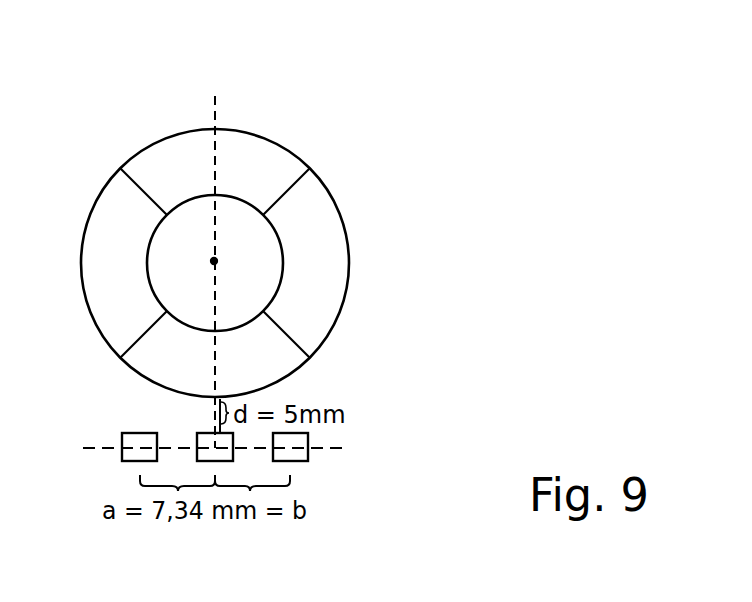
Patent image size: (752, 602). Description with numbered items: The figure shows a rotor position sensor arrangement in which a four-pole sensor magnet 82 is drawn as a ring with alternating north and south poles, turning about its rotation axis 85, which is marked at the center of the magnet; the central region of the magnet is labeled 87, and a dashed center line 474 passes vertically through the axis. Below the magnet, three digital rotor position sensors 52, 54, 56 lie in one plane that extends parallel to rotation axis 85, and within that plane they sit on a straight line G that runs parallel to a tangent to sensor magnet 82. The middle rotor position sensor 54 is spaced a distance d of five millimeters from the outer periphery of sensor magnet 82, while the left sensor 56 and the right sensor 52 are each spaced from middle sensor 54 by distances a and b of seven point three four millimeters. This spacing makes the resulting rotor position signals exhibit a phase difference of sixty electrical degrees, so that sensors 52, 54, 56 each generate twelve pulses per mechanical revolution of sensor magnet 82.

The sensor magnet 82 is at (326, 215).
The shaft 87 is at (266, 301).
The rotation axis 85 is at (212, 260).
The axis line 474 is at (213, 101).
The straight line G is at (343, 447).
The middle rotor position sensor 54 is at (201, 432).
The rotor position sensor 56 is at (128, 460).
The rotor position sensor 52 is at (300, 460).